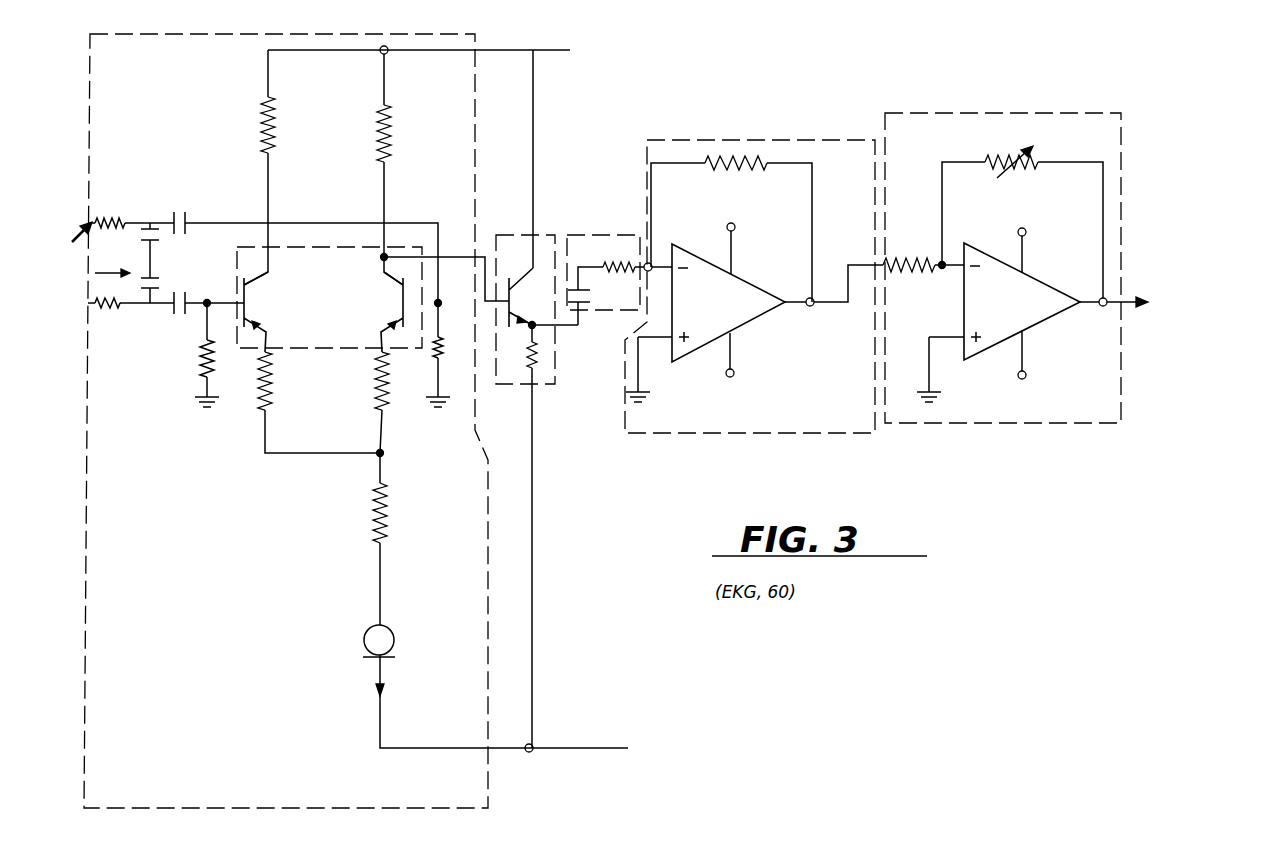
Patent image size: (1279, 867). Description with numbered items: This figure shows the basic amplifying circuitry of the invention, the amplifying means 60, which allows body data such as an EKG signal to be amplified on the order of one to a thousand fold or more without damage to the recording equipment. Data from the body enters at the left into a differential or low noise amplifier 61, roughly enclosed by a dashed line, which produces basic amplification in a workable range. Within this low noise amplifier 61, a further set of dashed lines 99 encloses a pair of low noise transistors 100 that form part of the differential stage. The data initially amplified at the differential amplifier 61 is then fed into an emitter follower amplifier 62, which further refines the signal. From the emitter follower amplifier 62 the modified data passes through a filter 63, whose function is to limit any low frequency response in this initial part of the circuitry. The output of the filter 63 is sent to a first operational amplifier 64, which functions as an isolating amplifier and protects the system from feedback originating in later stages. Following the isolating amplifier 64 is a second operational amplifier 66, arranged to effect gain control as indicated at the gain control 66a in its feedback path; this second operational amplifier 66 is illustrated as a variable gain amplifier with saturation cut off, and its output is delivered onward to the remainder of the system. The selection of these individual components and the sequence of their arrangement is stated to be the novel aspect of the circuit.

The amplifying means 60 is at (665, 92).
The differential amplifier 61 is at (90, 126).
The emitter follower amplifier 62 is at (546, 235).
The filter 63 is at (615, 235).
The first operational amplifier 64 is at (783, 140).
The second operational amplifier 66 is at (1008, 92).
The gain control 66a is at (1015, 152).
The dashed lines 99 is at (310, 247).
The low noise transistors 100 is at (256, 286).